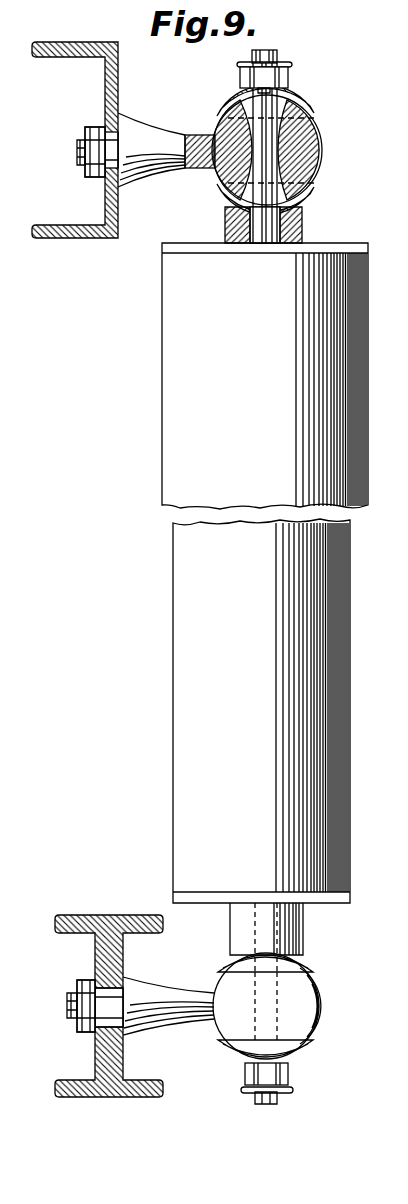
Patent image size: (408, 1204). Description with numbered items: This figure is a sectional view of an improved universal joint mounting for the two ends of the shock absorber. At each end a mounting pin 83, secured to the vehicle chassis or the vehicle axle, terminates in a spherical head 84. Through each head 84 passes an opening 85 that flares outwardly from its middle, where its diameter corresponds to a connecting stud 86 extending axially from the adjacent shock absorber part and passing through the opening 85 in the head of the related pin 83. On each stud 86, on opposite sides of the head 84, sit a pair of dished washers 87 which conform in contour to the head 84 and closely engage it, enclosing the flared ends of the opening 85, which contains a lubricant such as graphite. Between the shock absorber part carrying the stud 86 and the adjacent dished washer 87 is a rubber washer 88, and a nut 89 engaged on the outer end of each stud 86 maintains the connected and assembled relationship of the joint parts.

The mounting pin 83 is at (142, 129).
The spherical head 84 is at (302, 160).
The opening 85 is at (300, 118).
The connecting stud 86 is at (273, 107).
The dished washers 87 is at (246, 100).
The rubber washer 88 is at (305, 210).
The nut 89 is at (291, 65).